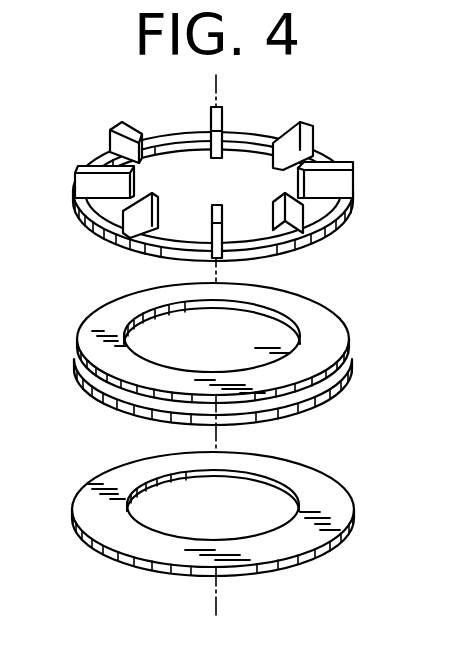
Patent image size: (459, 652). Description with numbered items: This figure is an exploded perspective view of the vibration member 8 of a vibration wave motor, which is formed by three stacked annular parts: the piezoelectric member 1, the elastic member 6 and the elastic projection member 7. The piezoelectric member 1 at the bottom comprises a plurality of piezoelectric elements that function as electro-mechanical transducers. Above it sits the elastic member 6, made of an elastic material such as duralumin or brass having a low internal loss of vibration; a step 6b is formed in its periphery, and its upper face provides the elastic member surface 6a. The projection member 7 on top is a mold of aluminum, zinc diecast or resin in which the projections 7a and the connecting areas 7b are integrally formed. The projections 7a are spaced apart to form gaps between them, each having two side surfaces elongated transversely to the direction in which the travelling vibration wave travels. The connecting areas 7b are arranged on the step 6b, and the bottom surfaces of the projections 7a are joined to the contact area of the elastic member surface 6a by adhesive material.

The piezoelectric member 1 is at (348, 528).
The elastic member 6 is at (258, 354).
The elastic member surface 6a is at (323, 328).
The step 6b is at (346, 357).
The elastic projection member 7 is at (265, 184).
The projections 7a is at (345, 182).
The connecting areas 7b is at (355, 209).
The vibration member 8 is at (68, 172).